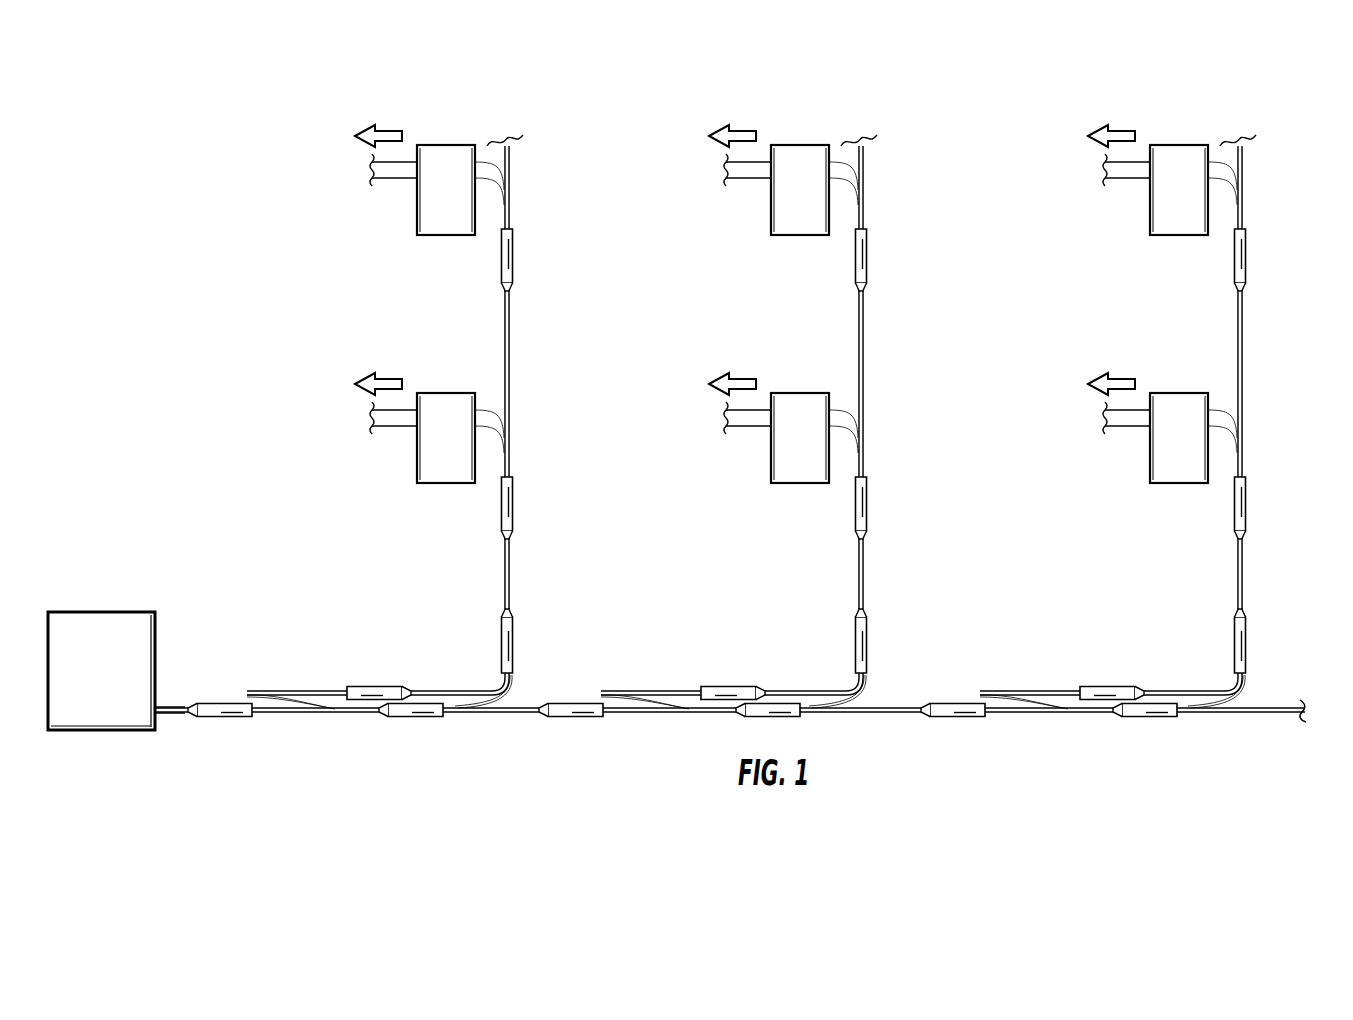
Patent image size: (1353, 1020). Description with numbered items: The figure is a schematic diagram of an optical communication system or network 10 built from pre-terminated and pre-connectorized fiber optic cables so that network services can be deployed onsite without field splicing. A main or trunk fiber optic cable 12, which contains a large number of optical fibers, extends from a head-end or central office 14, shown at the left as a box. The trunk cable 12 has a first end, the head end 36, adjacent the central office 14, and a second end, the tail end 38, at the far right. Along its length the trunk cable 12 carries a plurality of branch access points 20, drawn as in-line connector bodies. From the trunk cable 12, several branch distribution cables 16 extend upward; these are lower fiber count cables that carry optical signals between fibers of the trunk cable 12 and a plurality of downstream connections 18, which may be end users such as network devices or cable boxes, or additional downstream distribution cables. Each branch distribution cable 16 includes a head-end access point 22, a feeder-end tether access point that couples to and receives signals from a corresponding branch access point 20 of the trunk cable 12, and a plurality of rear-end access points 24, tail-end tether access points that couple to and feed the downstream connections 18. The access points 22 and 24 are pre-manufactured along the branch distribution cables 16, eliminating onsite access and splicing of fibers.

The optical communication network 10 is at (1282, 157).
The trunk fiber optic cable 12 is at (707, 714).
The central office 14 is at (100, 628).
The branch distribution cable 16 is at (764, 422).
The downstream connection 18 is at (796, 307).
The branch access point 20 is at (704, 730).
The head-end access point 22 is at (836, 654).
The rear-end access point 24 is at (914, 379).
The head end 36 is at (164, 702).
The tail end 38 is at (1314, 702).